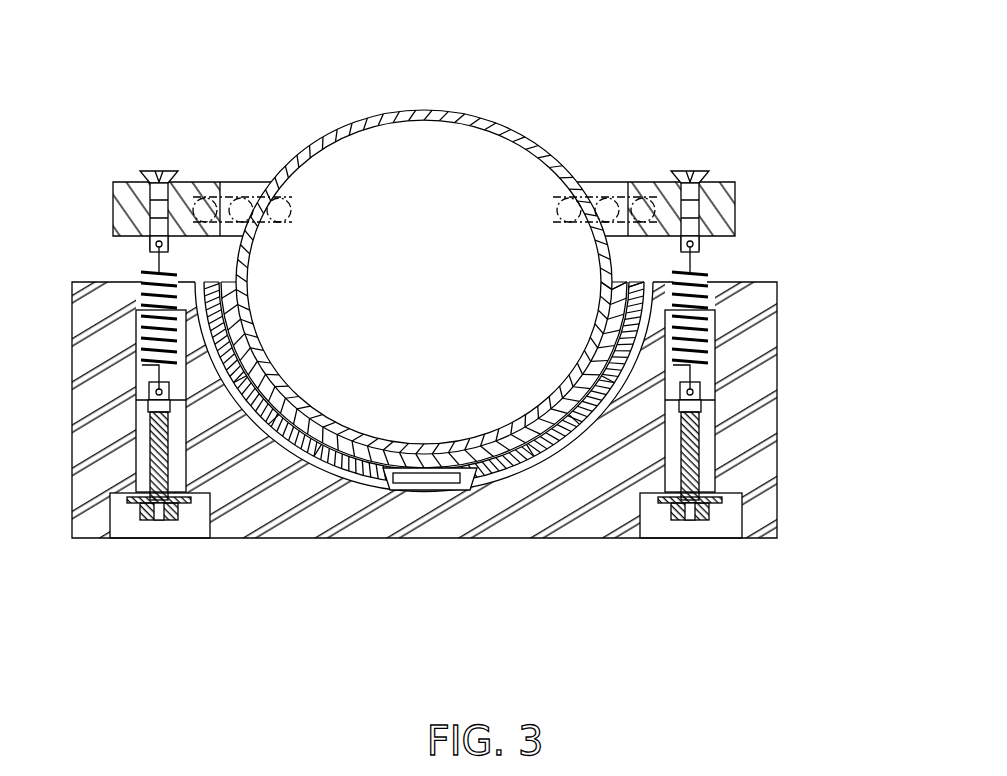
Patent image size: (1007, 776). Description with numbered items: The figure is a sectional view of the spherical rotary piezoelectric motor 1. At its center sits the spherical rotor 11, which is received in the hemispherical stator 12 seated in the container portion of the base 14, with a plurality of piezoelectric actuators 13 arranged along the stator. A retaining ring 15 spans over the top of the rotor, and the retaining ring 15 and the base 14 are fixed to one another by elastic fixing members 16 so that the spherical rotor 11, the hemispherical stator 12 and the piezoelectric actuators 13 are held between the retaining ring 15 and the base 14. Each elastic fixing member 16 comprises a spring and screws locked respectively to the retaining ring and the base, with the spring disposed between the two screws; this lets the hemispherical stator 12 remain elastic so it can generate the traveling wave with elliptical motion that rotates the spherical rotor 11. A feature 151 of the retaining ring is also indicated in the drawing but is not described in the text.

The spherical rotary piezoelectric motor 1 is at (457, 306).
The spherical rotor 11 is at (365, 124).
The hemispherical stator 12 is at (493, 452).
The piezoelectric actuators 13 is at (297, 460).
The base 14 is at (765, 328).
The retaining ring 15 is at (745, 210).
The guide rod 151 is at (603, 192).
The elastic fixing member 16 is at (690, 150).